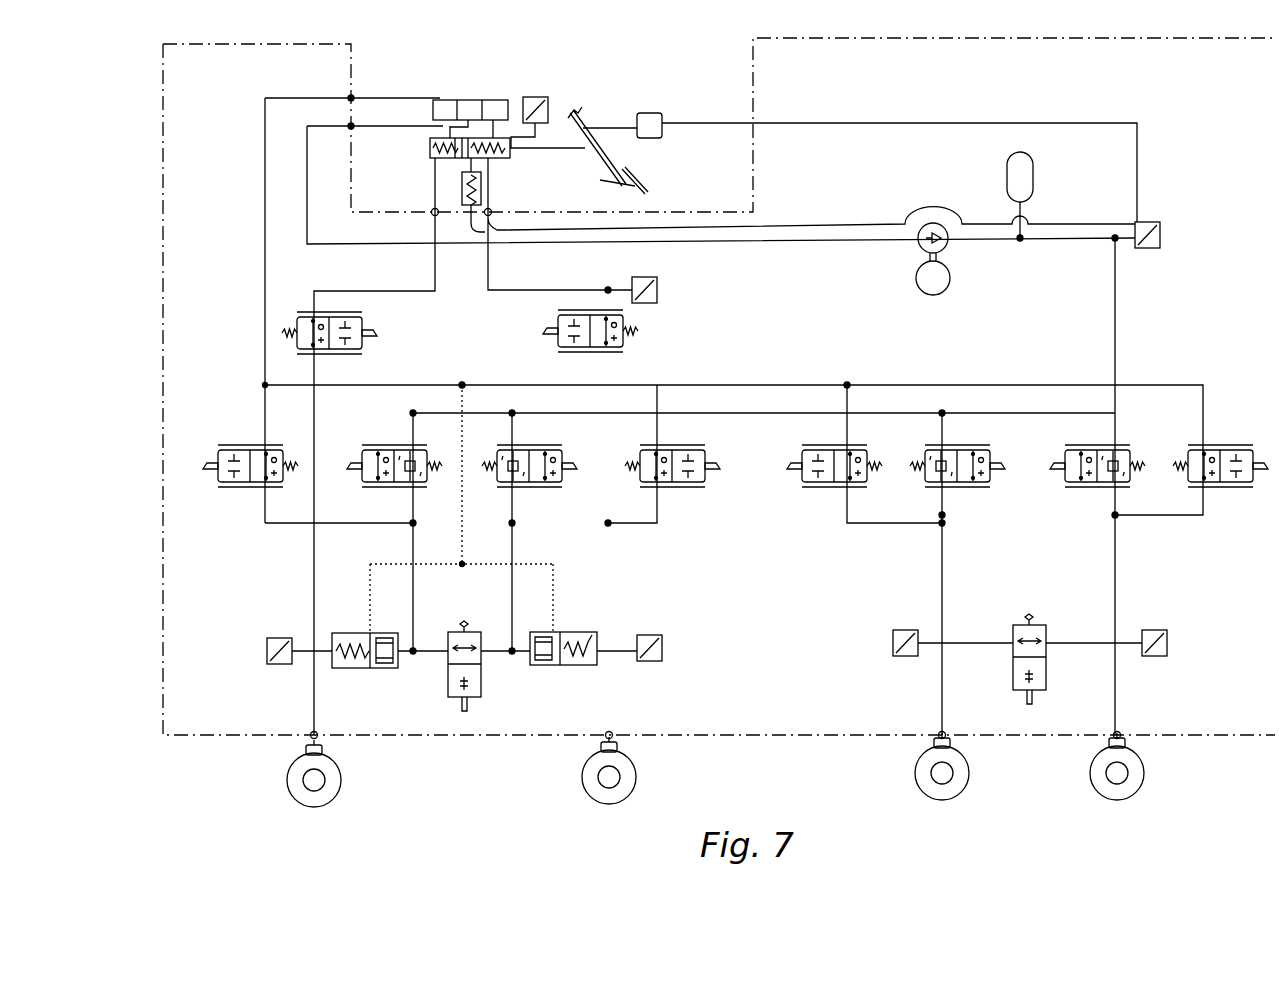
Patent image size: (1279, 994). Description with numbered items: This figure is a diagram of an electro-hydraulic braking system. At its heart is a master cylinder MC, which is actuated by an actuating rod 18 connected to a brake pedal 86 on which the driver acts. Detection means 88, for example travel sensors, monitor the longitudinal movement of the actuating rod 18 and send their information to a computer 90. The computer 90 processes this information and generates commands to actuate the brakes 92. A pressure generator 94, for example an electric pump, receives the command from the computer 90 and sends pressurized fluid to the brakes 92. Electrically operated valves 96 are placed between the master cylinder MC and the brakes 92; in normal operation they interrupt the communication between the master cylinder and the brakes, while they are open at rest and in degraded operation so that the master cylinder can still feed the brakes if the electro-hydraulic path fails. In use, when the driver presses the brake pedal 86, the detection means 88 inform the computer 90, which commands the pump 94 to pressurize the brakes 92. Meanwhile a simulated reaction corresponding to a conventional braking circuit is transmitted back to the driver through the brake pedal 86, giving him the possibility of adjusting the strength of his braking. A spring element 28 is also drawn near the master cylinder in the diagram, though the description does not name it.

The actuating rod 18 is at (567, 149).
The pedal travel simulator spring 28 is at (462, 180).
The master cylinder MC is at (506, 160).
The brake pedal 86 is at (637, 188).
The detection means 88 is at (660, 120).
The computer 90 is at (1163, 232).
The brakes 92 is at (590, 777).
The pressure generator 94 is at (947, 222).
The electrically operated valves 96 is at (362, 348).